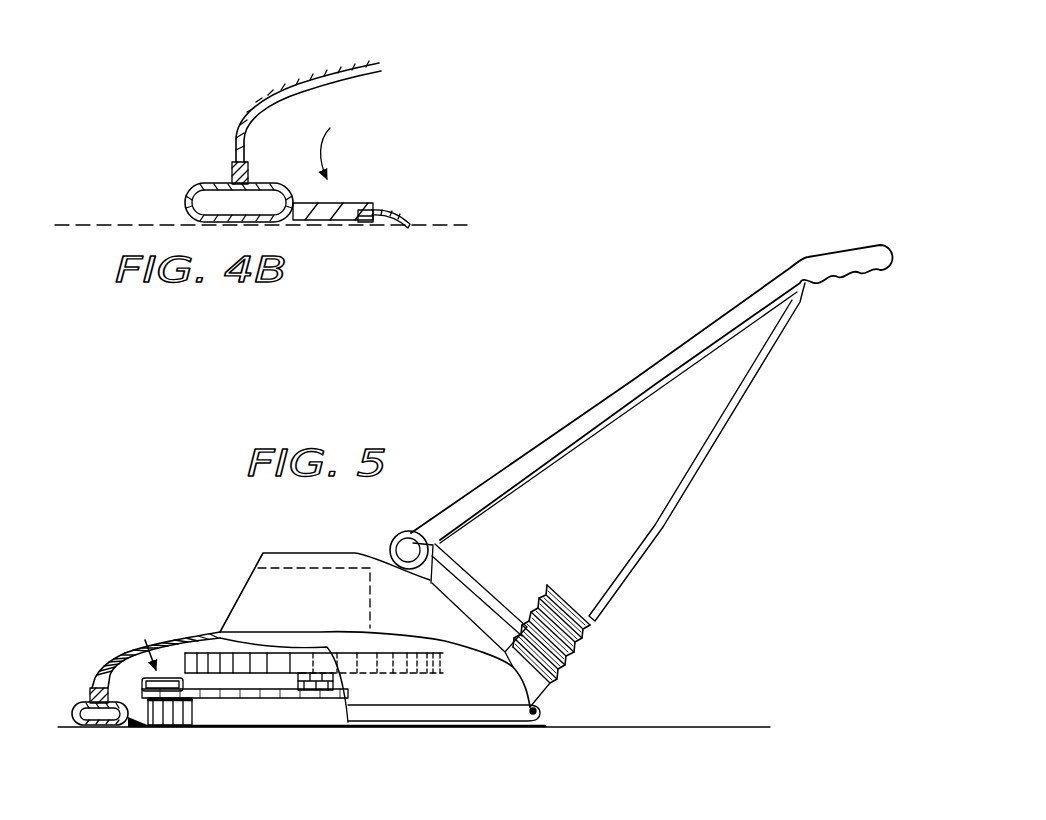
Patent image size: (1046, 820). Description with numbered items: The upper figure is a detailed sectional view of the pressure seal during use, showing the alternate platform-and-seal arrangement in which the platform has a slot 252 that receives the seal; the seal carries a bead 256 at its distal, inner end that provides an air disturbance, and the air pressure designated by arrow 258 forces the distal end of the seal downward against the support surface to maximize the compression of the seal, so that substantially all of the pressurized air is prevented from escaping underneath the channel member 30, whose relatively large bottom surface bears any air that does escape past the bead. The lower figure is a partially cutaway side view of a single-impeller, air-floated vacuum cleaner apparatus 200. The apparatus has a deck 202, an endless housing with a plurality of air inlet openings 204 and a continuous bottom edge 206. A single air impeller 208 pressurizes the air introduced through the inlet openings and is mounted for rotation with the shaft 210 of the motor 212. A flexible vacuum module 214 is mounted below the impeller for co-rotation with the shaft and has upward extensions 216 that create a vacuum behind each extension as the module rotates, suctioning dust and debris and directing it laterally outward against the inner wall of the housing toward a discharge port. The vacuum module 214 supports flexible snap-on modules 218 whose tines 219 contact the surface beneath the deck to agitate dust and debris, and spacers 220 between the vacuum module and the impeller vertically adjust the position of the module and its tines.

In FIG. 4B, the slot 252 is at (365, 225).
In FIG. 4B, the bead 256 is at (410, 216).
In FIG. 4B, the arrow 258 is at (404, 206).
In FIG. 5, the air-floated vacuum cleaner apparatus 200 is at (146, 565).
In FIG. 5, the motor 212 is at (262, 552).
In FIG. 5, the deck 202 is at (177, 635).
In FIG. 5, the air inlet openings 204 is at (130, 690).
In FIG. 5, the upward extensions 216 is at (117, 660).
In FIG. 5, the channel member 30 is at (72, 693).
In FIG. 5, the continuous bottom edge 206 is at (92, 726).
In FIG. 5, the tines 219 is at (163, 722).
In FIG. 5, the flexible snap-on modules 218 is at (189, 716).
In FIG. 5, the air impeller 208 is at (223, 675).
In FIG. 5, the flexible vacuum module 214 is at (267, 699).
In FIG. 5, the spacers 220 is at (284, 697).
In FIG. 5, the shaft 210 is at (313, 700).